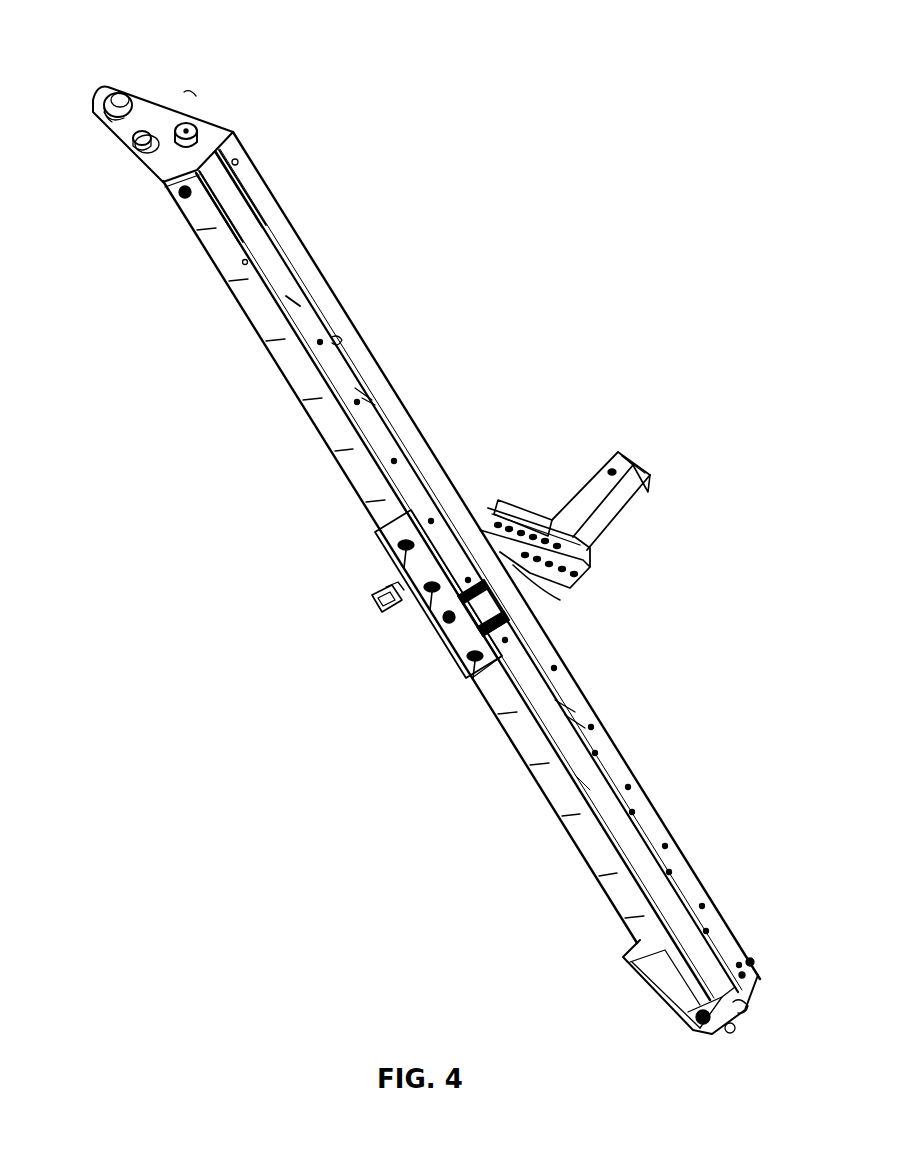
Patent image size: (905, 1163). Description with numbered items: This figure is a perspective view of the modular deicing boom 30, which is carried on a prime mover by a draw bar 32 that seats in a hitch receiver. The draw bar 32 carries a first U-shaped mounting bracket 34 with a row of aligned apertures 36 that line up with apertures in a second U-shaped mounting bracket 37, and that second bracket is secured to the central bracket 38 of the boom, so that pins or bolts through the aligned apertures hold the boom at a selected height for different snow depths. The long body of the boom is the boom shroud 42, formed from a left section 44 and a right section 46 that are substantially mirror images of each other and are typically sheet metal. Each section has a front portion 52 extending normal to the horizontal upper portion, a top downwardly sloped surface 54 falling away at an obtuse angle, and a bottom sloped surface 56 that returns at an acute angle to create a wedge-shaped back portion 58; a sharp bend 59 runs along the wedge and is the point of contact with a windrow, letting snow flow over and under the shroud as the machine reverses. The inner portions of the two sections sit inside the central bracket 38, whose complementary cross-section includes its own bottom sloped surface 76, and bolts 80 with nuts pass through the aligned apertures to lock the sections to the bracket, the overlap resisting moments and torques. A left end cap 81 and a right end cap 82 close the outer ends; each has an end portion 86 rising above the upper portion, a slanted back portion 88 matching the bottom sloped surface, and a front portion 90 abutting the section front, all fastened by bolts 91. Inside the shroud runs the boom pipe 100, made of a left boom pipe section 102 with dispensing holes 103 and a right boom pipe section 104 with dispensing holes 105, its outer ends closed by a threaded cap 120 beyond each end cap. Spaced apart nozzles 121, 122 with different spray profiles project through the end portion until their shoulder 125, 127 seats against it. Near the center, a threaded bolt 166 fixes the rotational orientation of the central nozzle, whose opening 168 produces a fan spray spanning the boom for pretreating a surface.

The boom 30 is at (263, 447).
The draw bar 32 is at (622, 493).
The first U-shaped mounting bracket 34 is at (520, 522).
The aligned apertures 36 is at (498, 507).
The second U-shaped mounting bracket 37 is at (557, 590).
The central bracket 38 is at (550, 580).
The boom shroud 42 is at (294, 393).
The left section 44 is at (559, 827).
The right section 46 is at (259, 334).
The front portion 52 is at (306, 256).
The top downwardly sloped surface 54 is at (621, 891).
The bottom sloped surface 56 is at (246, 292).
The wedge-shaped back portion 58 is at (509, 748).
The sharp bend 59 is at (342, 487).
The bottom sloped surface 76 is at (448, 625).
The bolts 80 is at (372, 598).
The left end cap 81 is at (653, 995).
The right end cap 82 is at (161, 99).
The end portion 86 is at (212, 136).
The slanted back portion 88 is at (244, 262).
The front portion 90 is at (247, 152).
The bolts 91 is at (236, 130).
The boom pipe 100 is at (596, 788).
The left boom pipe section 102 is at (300, 302).
The dispensing holes 103 is at (330, 342).
The right boom pipe section 104 is at (562, 718).
The dispensing holes 105 is at (628, 813).
The threaded cap 120 is at (186, 124).
The nozzle 121 is at (132, 141).
The nozzle 122 is at (116, 92).
The shoulder 125 is at (143, 153).
The shoulder 127 is at (104, 116).
The threaded bolt 166 is at (381, 575).
The opening 168 is at (378, 607).